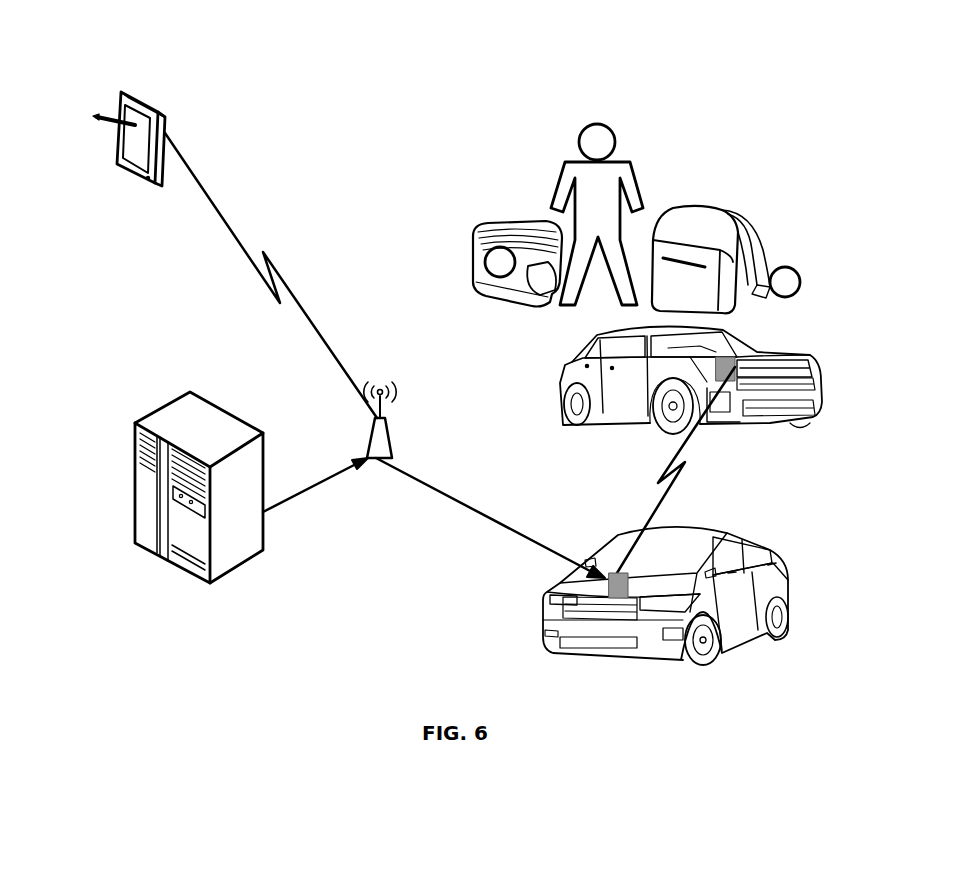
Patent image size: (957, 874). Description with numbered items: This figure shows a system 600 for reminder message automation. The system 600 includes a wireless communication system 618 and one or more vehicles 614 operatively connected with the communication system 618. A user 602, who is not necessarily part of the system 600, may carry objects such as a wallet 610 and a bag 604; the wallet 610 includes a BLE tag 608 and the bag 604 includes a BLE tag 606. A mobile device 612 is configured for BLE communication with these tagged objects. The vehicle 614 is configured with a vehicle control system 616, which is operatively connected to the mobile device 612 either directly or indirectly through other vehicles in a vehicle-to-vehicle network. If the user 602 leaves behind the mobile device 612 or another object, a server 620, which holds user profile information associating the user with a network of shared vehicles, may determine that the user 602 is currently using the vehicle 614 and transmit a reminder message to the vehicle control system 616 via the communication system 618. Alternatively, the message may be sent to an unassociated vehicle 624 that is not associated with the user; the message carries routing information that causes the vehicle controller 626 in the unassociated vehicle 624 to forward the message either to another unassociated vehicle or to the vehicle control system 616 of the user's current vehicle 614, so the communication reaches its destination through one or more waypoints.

The system 600 is at (803, 88).
The user 602 is at (615, 168).
The bag 604 is at (705, 212).
The BLE tag 606 is at (803, 277).
The BLE tag 608 is at (487, 273).
The wallet 610 is at (498, 223).
The mobile device 612 is at (121, 109).
The vehicle 614 is at (557, 388).
The vehicle control system 616 is at (735, 367).
The wireless communication system 618 is at (392, 443).
The server 620 is at (227, 557).
The unassociated vehicle 624 is at (757, 542).
The vehicle controller 626 is at (619, 588).